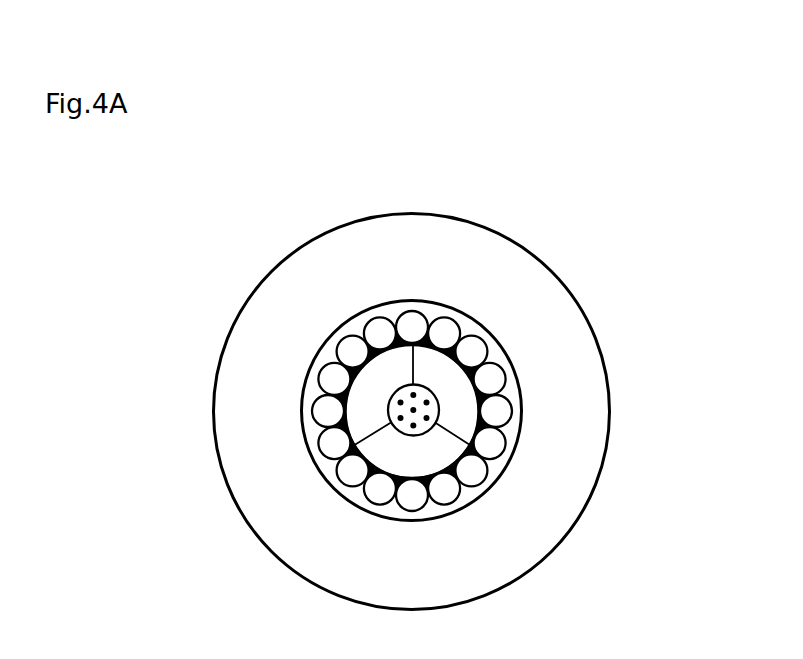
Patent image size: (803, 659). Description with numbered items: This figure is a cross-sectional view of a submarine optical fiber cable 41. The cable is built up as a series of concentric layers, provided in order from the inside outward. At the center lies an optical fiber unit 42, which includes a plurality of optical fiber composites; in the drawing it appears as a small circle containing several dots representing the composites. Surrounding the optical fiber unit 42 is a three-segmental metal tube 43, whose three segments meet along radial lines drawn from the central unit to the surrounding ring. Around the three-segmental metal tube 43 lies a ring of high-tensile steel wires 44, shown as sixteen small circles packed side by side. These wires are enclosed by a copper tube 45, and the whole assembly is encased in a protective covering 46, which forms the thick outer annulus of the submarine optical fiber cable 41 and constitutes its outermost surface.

The submarine optical fiber cable 41 is at (437, 197).
The optical fiber unit 42 is at (419, 395).
The three-segmental metal tube 43 is at (448, 408).
The high-tensile steel wires 44 is at (500, 417).
The copper tube 45 is at (512, 440).
The protective covering 46 is at (525, 523).